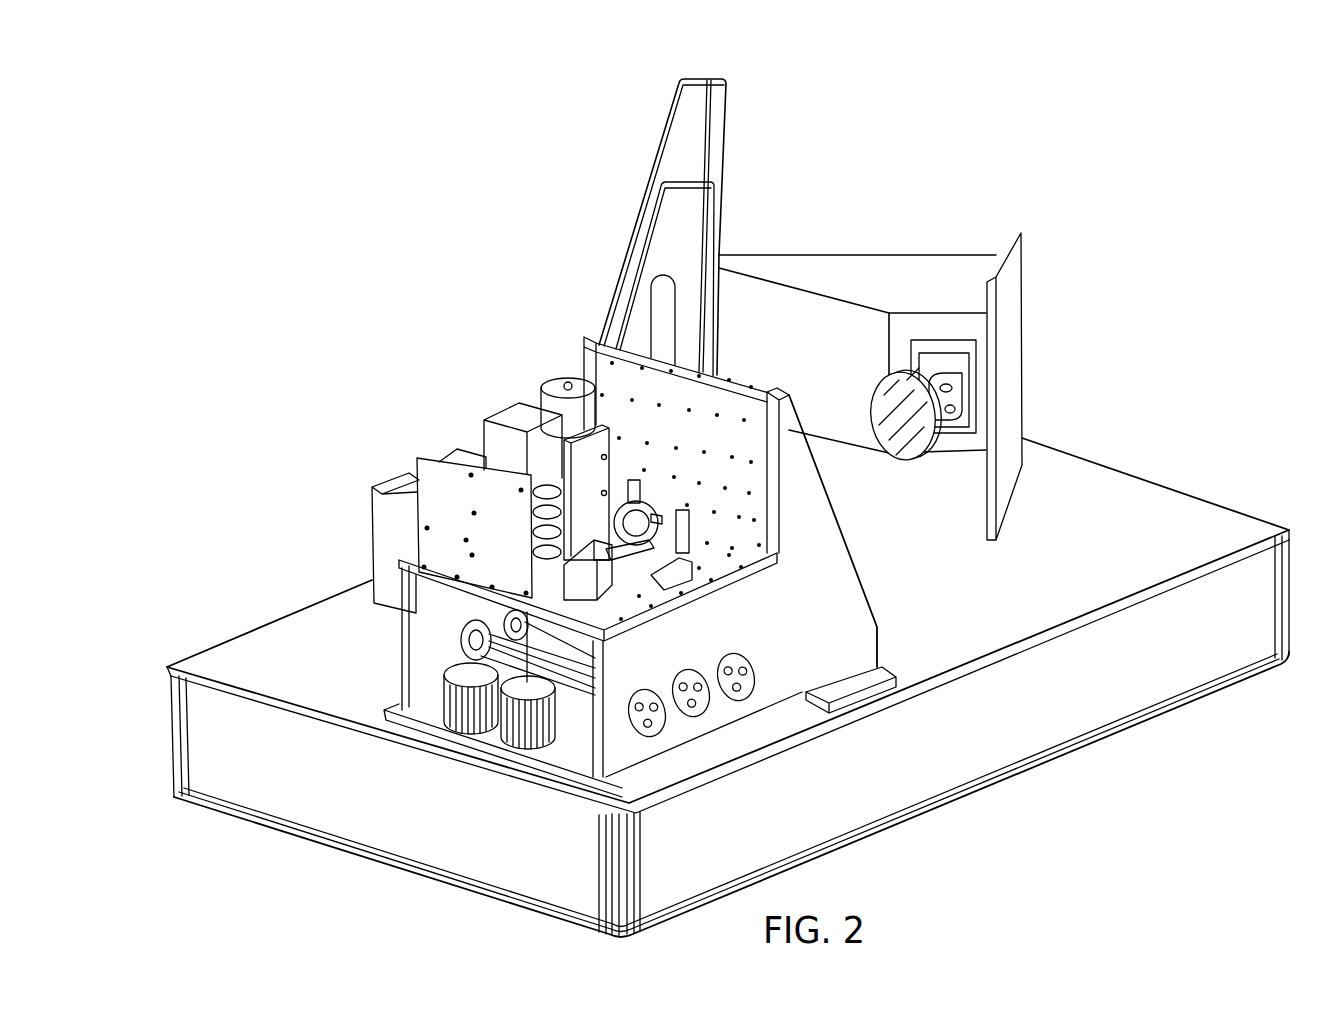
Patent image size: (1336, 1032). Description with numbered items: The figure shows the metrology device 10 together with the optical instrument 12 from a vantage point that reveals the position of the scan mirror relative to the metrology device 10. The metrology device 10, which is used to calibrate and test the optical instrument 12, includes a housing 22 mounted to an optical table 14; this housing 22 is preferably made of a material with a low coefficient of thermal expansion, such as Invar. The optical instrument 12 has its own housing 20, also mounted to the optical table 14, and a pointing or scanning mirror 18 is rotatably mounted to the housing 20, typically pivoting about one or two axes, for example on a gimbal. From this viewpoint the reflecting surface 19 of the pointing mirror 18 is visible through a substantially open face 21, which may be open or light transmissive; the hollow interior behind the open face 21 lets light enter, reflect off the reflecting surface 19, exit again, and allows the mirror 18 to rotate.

The metrology device 10 is at (500, 381).
The optical instrument 12 is at (938, 135).
The optical table 14 is at (990, 753).
The pointing mirror 18 is at (912, 378).
The reflecting surface 19 is at (882, 395).
The housing 20 is at (1007, 487).
The open face 21 is at (723, 298).
The housing 22 is at (847, 603).